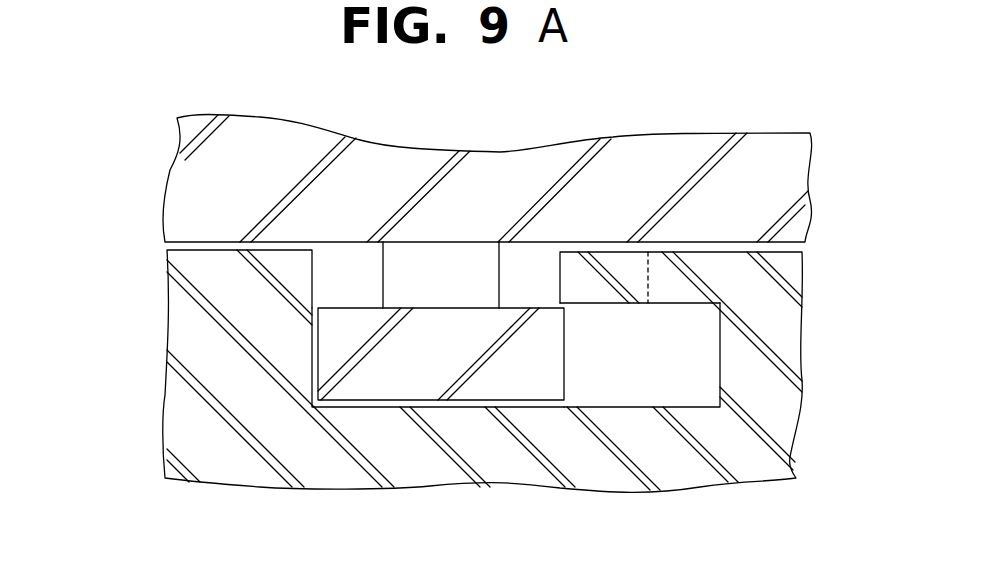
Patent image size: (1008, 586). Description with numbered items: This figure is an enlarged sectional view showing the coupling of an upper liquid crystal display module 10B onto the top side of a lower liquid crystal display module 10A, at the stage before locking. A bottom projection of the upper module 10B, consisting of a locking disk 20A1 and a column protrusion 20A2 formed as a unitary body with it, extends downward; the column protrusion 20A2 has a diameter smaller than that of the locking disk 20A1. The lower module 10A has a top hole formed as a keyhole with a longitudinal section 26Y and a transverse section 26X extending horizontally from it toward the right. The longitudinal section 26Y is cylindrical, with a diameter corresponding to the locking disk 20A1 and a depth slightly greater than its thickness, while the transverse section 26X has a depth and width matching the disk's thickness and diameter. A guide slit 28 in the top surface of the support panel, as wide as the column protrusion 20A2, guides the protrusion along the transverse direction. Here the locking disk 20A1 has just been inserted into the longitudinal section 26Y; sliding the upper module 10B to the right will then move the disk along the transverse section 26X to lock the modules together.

The liquid crystal display module 10B is at (228, 165).
The liquid crystal display module 10A is at (213, 343).
The locking disk 20A1 is at (508, 378).
The column protrusion 20A2 is at (415, 280).
The transverse section 26X is at (643, 392).
The longitudinal section 26Y is at (370, 408).
The guide slit 28 is at (622, 272).